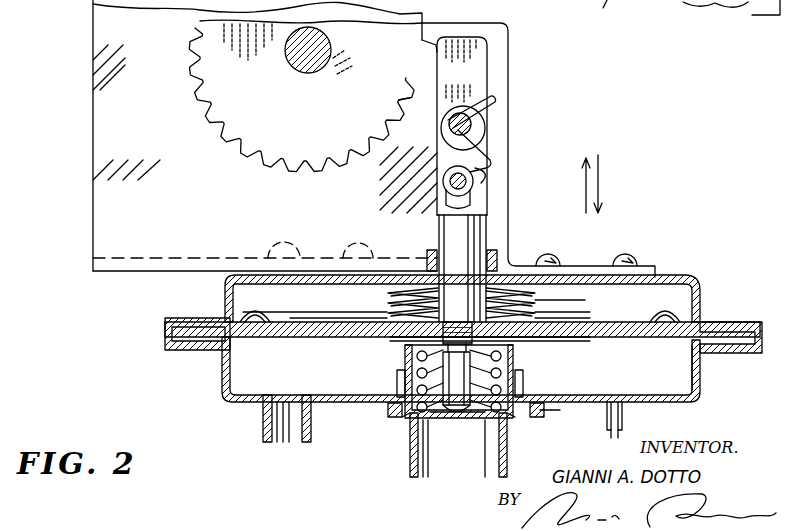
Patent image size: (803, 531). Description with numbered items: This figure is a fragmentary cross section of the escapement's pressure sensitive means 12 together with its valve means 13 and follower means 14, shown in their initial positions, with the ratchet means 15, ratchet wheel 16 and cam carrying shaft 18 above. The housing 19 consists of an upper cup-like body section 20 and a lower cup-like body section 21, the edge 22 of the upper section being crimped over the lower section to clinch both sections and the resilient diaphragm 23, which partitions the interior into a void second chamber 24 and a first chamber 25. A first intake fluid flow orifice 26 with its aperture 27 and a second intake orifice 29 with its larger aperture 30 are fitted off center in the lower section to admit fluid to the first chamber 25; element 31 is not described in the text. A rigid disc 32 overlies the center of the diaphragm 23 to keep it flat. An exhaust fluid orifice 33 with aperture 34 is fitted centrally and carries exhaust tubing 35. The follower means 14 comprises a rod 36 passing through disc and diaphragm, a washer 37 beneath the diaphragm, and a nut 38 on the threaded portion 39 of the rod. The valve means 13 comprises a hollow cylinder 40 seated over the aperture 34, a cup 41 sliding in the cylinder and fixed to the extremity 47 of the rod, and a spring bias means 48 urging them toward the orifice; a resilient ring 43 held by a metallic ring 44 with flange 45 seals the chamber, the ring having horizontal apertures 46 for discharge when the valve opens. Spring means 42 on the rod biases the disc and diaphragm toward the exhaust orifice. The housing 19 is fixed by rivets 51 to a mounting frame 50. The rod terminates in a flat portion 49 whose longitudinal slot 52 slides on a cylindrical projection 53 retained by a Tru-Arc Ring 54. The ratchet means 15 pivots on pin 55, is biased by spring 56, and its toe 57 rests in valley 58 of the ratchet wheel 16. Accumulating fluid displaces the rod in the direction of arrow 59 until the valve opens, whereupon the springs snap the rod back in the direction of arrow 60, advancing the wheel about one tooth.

The pressure sensitive means 12 is at (697, 260).
The valve means 13 is at (527, 369).
The follower means 14 is at (490, 230).
The ratchet means 15 is at (478, 85).
The ratchet wheel 16 is at (298, 128).
The cam carrying shaft 18 is at (293, 62).
The housing 19 is at (141, 319).
The upper cup-like body section 20 is at (222, 296).
The lower cup-like body section 21 is at (220, 395).
The edge 22 is at (162, 340).
The diaphragm 23 is at (302, 333).
The second chamber 24 is at (688, 308).
The first chamber 25 is at (680, 372).
The first intake fluid flow orifice 26 is at (620, 412).
The aperture 27 is at (610, 433).
The second intake orifice 29 is at (265, 417).
The aperture 30 is at (293, 433).
The mounting member 31 is at (598, 13).
The rigid disc 32 is at (337, 322).
The exhaust fluid orifice 33 is at (412, 452).
The aperture 34 is at (435, 468).
The exhaust tubing 35 is at (713, 2).
The rod 36 is at (448, 242).
The washer 37 is at (392, 343).
The nut 38 is at (425, 366).
The threaded portion 39 is at (453, 328).
The hollow cylinder 40 is at (515, 350).
The cup 41 is at (534, 384).
The spring means 42 is at (530, 297).
The resilient ring 43 is at (383, 418).
The metallic ring 44 is at (405, 363).
The flange 45 is at (548, 403).
The horizontal apertures 46 is at (398, 385).
The extremity 47 is at (465, 397).
The spring bias means 48 is at (483, 410).
The flat portion 49 is at (477, 165).
The mounting frame 50 is at (105, 133).
The rivets 51 is at (617, 257).
The longitudinal slot 52 is at (440, 207).
The cylindrical projection 53 is at (470, 186).
The Tru-Arc Ring 54 is at (473, 182).
The pin 55 is at (473, 125).
The spring 56 is at (488, 157).
The toe 57 is at (417, 57).
The valley 58 is at (415, 124).
The arrow 59 is at (588, 190).
The arrow 60 is at (598, 160).